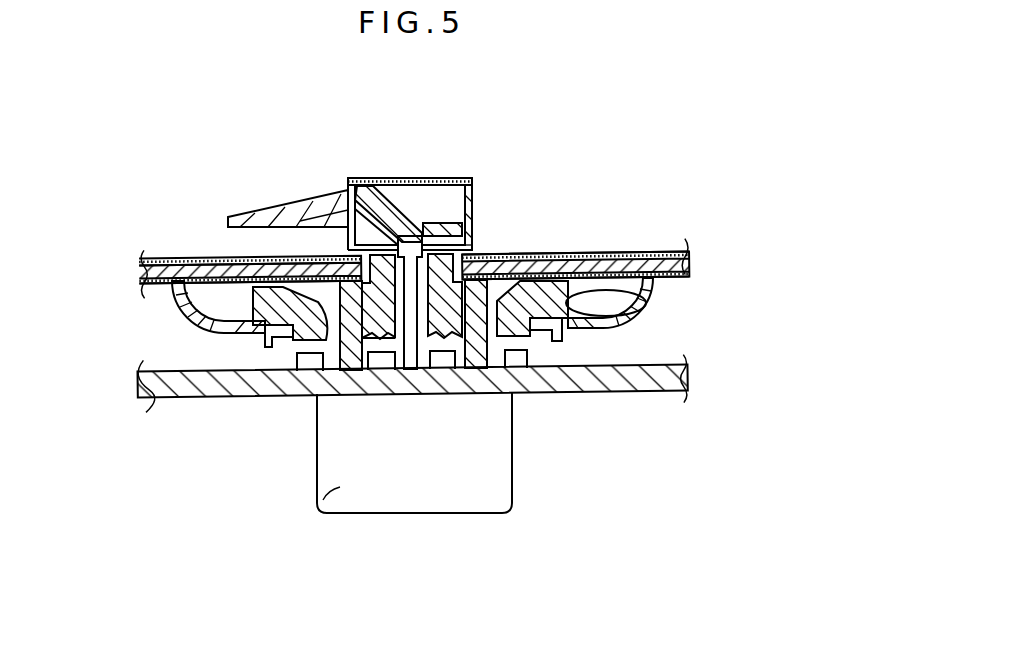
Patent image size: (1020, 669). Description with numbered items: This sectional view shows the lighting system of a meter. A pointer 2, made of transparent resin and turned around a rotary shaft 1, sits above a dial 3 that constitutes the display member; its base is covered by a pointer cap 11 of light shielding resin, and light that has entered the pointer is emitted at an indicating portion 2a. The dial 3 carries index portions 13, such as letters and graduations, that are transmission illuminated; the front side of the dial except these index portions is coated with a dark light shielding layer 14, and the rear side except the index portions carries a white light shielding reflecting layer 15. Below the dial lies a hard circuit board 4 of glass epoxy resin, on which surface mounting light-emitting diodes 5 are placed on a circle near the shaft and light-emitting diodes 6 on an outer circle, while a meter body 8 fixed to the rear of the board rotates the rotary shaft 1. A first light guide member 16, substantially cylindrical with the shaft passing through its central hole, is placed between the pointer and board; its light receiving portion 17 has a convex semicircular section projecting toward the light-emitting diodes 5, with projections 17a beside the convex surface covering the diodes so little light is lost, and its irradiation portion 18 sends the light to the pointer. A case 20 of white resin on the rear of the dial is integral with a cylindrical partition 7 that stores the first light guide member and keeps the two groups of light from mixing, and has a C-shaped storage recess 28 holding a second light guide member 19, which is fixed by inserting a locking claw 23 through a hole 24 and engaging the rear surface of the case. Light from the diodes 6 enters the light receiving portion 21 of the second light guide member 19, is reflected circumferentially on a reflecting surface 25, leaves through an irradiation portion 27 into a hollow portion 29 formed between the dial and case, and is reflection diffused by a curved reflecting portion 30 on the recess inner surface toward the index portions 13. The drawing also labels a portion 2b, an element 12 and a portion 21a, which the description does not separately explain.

The rotary shaft 1 is at (416, 372).
The pointer 2 is at (446, 160).
The indicating portion 2a is at (268, 207).
The side wall 2b is at (432, 222).
The dial 3 is at (666, 240).
The circuit board 4 is at (575, 392).
The light-emitting diodes 5 is at (384, 372).
The light-emitting diodes 6 is at (307, 362).
The cylindrical partition 7 is at (352, 193).
The meter body 8 is at (317, 510).
The pointer cap 11 is at (450, 177).
The lower board layer 12 is at (172, 257).
The index portions 13 is at (180, 257).
The light shielding layer 14 is at (205, 256).
The light shielding reflecting layer 15 is at (252, 302).
The first light guide member 16 is at (405, 372).
The light receiving portion 17 is at (430, 393).
The projections 17a is at (348, 372).
The irradiation portion 18 is at (413, 188).
The second light guide member 19 is at (582, 281).
The case 20 is at (207, 330).
The light receiving portion 21 is at (348, 282).
The contact end 21a is at (286, 343).
The locking claw 23 is at (266, 347).
The hole 24 is at (601, 355).
The reflecting surface 25 is at (290, 213).
The irradiation portion 27 is at (619, 307).
The storage recess 28 is at (252, 318).
The hollow portion 29 is at (598, 253).
The reflecting portion 30 is at (604, 330).